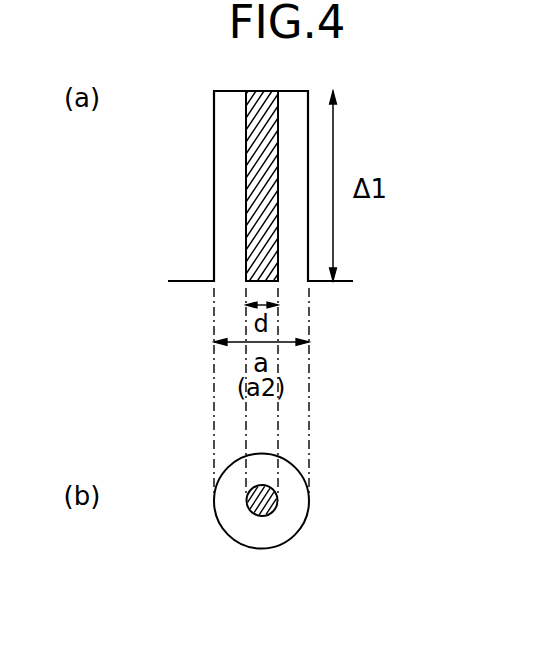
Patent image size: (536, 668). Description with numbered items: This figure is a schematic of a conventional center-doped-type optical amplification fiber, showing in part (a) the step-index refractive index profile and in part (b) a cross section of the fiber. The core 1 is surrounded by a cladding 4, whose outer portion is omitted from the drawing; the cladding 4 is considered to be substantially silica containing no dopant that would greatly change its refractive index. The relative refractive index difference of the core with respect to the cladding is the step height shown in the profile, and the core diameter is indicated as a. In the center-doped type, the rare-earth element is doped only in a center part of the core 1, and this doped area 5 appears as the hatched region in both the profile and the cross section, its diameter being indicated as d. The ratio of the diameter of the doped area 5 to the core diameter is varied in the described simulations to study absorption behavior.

The core 1 is at (288, 482).
The cladding 4 is at (212, 529).
The through hole 5 is at (251, 496).